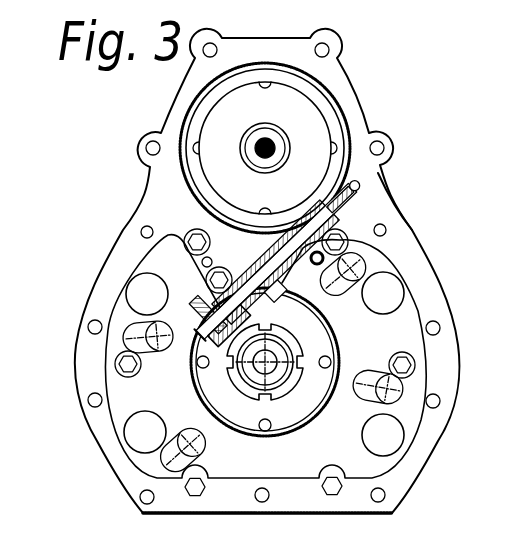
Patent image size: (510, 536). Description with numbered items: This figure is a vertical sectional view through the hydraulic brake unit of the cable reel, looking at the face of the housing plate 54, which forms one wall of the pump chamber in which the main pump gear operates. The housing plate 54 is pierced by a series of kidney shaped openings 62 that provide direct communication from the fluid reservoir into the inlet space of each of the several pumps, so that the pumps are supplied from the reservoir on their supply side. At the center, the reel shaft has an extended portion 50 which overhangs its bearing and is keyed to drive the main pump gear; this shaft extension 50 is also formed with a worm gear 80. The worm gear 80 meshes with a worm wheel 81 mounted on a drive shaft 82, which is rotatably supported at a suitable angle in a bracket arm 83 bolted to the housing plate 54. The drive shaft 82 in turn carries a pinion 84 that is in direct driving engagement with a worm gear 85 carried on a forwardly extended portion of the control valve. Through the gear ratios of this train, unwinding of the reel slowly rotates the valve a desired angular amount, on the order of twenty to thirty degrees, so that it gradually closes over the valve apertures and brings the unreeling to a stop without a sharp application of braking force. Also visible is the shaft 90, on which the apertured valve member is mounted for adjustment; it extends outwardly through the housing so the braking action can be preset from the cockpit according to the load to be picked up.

The extended portion of shaft 50 is at (268, 372).
The housing plate 54 is at (81, 355).
The kidney shaped openings 62 is at (455, 381).
The worm gear 80 is at (284, 352).
The worm wheel 81 is at (197, 300).
The drive shaft 82 is at (272, 288).
The bracket arm 83 is at (318, 288).
The pinion 84 is at (340, 215).
The worm gear 85 is at (374, 172).
The shaft 90 is at (268, 146).